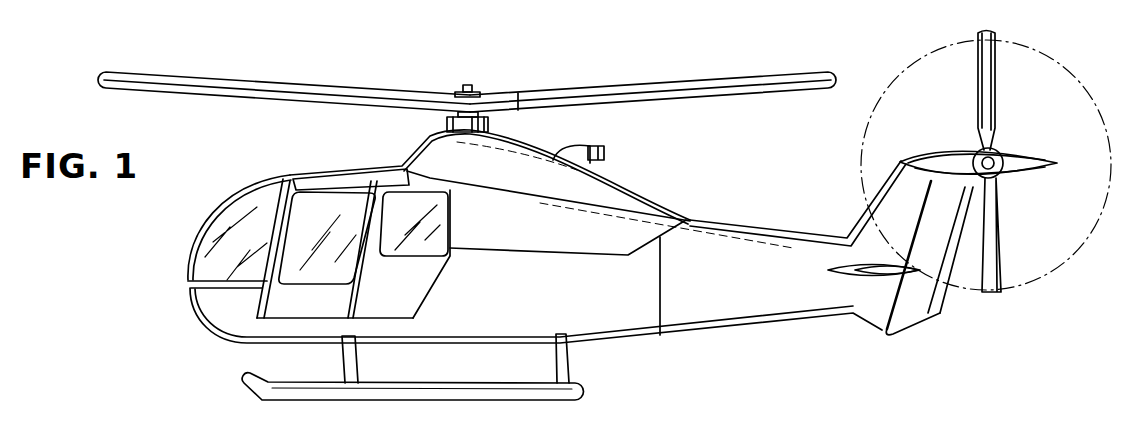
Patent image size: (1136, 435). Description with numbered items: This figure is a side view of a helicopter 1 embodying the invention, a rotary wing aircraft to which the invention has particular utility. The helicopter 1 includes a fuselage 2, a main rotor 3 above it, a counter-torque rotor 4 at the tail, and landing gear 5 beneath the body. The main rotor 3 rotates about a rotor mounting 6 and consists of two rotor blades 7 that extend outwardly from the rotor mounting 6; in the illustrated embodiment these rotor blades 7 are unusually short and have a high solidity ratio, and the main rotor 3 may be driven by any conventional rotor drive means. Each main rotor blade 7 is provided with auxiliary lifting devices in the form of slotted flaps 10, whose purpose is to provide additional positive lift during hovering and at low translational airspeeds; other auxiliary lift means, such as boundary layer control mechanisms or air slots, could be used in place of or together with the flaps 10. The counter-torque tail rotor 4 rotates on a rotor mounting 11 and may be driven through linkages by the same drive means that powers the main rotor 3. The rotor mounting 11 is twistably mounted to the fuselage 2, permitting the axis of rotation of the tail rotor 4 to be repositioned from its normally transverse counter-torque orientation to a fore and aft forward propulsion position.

The helicopter 1 is at (188, 283).
The fuselage 2 is at (548, 300).
The main rotor 3 is at (474, 92).
The counter-torque rotor 4 is at (995, 288).
The landing gear 5 is at (552, 392).
The rotor mounting 6 is at (490, 122).
The rotor blades 7 is at (278, 88).
The slotted flaps 10 is at (675, 94).
The rotor mounting 11 is at (1012, 160).